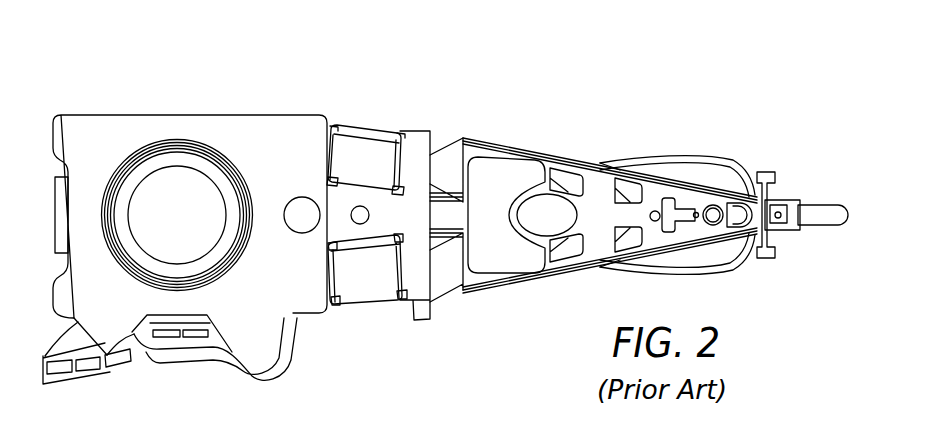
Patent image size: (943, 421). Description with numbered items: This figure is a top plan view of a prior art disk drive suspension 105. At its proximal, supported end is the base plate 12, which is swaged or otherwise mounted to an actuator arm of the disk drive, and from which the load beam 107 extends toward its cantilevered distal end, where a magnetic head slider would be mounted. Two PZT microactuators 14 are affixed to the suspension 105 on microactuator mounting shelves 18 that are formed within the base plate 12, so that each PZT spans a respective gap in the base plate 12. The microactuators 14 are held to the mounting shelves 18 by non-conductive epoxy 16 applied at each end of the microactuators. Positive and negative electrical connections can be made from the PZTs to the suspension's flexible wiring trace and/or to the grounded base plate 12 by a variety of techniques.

The base plate 12 is at (128, 338).
The PZT microactuator 14 is at (360, 137).
The non-conductive epoxy 16 is at (338, 127).
The microactuator mounting shelf 18 is at (400, 188).
The disk drive suspension 105 is at (650, 158).
The load beam 107 is at (537, 150).